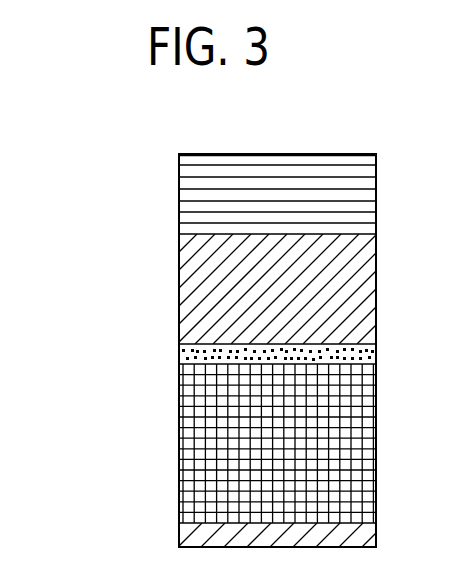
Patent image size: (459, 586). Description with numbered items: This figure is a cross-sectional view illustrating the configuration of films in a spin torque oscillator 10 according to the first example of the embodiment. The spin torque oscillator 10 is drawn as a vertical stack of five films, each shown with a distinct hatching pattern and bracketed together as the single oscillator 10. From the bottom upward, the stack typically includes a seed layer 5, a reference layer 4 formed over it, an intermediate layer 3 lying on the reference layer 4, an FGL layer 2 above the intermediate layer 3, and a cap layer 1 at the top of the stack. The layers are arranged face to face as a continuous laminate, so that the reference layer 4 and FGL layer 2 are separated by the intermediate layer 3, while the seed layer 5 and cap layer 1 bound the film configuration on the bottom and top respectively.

The spin torque oscillator 10 is at (87, 164).
The cap layer 1 is at (180, 193).
The FGL layer 2 is at (180, 277).
The intermediate layer 3 is at (180, 351).
The reference layer 4 is at (178, 441).
The seed layer 5 is at (178, 537).